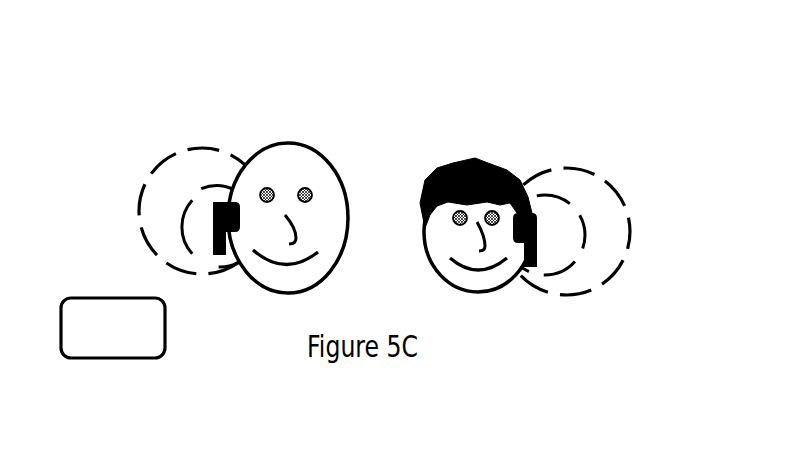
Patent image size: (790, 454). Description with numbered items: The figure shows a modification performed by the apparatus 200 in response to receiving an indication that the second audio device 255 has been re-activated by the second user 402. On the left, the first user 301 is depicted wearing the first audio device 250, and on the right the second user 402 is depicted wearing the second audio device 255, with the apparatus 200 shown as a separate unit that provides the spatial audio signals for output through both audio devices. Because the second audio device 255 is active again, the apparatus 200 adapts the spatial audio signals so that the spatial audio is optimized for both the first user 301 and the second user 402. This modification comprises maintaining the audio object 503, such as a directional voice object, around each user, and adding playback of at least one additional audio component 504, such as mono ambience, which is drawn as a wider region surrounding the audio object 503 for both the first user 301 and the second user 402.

The apparatus 200 is at (137, 362).
The first audio device 250 is at (212, 263).
The second audio device 255 is at (533, 277).
The first user 301 is at (307, 142).
The second user 402 is at (485, 162).
The audio object 503 is at (210, 185).
The additional audio component 504 is at (162, 158).